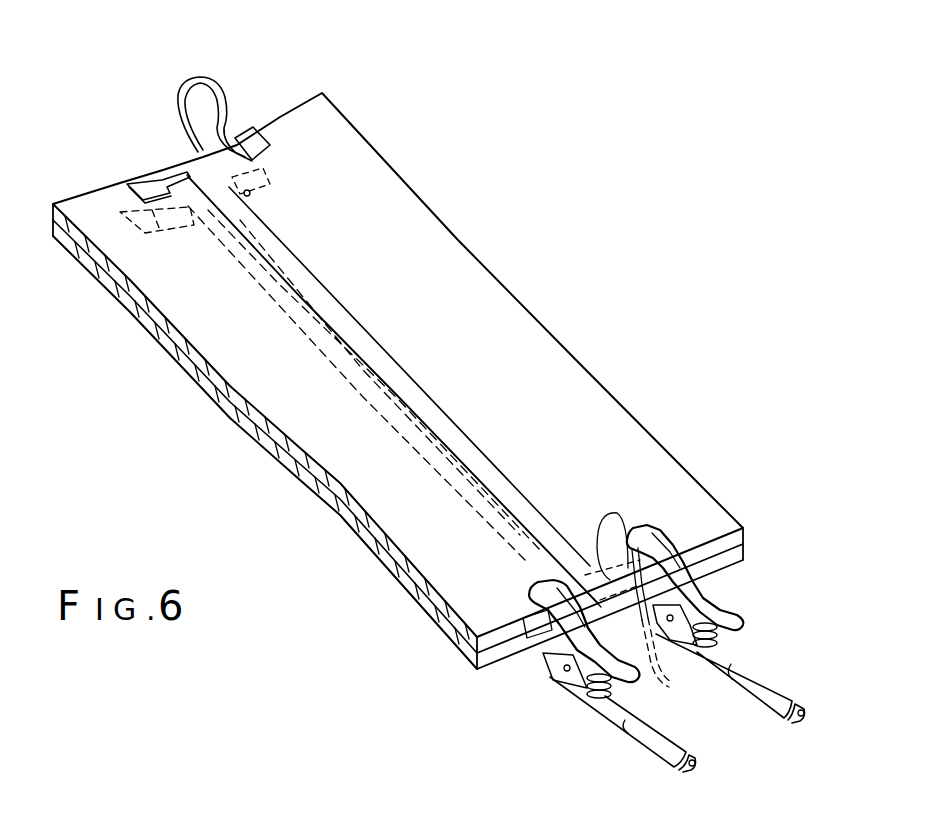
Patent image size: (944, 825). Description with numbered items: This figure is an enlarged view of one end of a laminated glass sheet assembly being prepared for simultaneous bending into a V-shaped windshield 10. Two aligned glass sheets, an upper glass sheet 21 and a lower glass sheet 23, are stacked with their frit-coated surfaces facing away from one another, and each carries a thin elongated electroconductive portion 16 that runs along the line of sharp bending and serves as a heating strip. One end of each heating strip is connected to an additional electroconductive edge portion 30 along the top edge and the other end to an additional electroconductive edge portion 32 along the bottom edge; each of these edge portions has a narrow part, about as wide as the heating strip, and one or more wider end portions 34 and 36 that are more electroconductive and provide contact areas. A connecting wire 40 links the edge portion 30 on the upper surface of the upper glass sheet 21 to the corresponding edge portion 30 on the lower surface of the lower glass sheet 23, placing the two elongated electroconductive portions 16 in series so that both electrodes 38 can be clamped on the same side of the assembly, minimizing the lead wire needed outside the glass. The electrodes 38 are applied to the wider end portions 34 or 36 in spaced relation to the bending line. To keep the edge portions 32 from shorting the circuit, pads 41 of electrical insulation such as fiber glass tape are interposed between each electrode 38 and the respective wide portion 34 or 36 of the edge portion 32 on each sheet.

The V-shaped windshield 10 is at (556, 280).
The thin elongated electroconductive portion 16 is at (383, 357).
The upper glass sheet 21 is at (263, 442).
The lower glass sheet 23 is at (300, 490).
The additional electroconductive edge portion 30 is at (172, 185).
The additional electroconductive edge portion 32 is at (607, 603).
The wider end portion 34 is at (140, 197).
The wider end portion 36 is at (675, 629).
The electrode 38 is at (727, 603).
The connecting wire 40 is at (203, 78).
The pad of electrical insulation material 41 is at (480, 693).